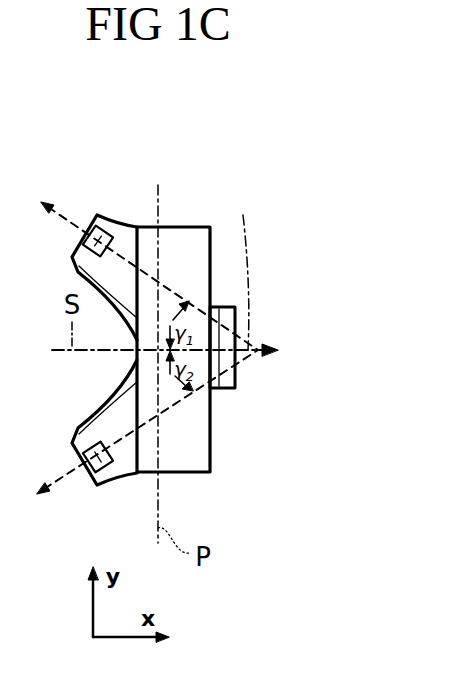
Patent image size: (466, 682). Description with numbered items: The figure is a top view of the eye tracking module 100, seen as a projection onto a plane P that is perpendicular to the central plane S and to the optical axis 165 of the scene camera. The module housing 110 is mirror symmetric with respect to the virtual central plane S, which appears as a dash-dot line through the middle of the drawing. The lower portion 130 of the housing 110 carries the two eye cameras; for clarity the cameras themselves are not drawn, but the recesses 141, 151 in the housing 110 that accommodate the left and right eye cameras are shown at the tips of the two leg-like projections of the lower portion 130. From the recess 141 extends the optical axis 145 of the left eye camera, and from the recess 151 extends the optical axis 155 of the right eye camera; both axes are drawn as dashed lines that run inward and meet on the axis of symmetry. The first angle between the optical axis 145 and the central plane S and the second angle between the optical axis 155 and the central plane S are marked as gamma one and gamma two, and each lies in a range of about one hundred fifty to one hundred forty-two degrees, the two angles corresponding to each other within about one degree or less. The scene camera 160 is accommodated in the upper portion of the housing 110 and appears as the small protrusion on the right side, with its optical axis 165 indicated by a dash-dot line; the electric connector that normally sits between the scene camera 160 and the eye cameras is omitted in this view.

The eye tracking module 100 is at (161, 104).
The module housing 110 is at (182, 203).
The lower portion 130 is at (88, 213).
The recess 141 is at (105, 227).
The optical axis of left eye camera 145 is at (135, 276).
The recess 151 is at (107, 473).
The optical axis of right eye camera 155 is at (58, 480).
The scene camera 160 is at (223, 396).
The optical axis 165 is at (240, 271).